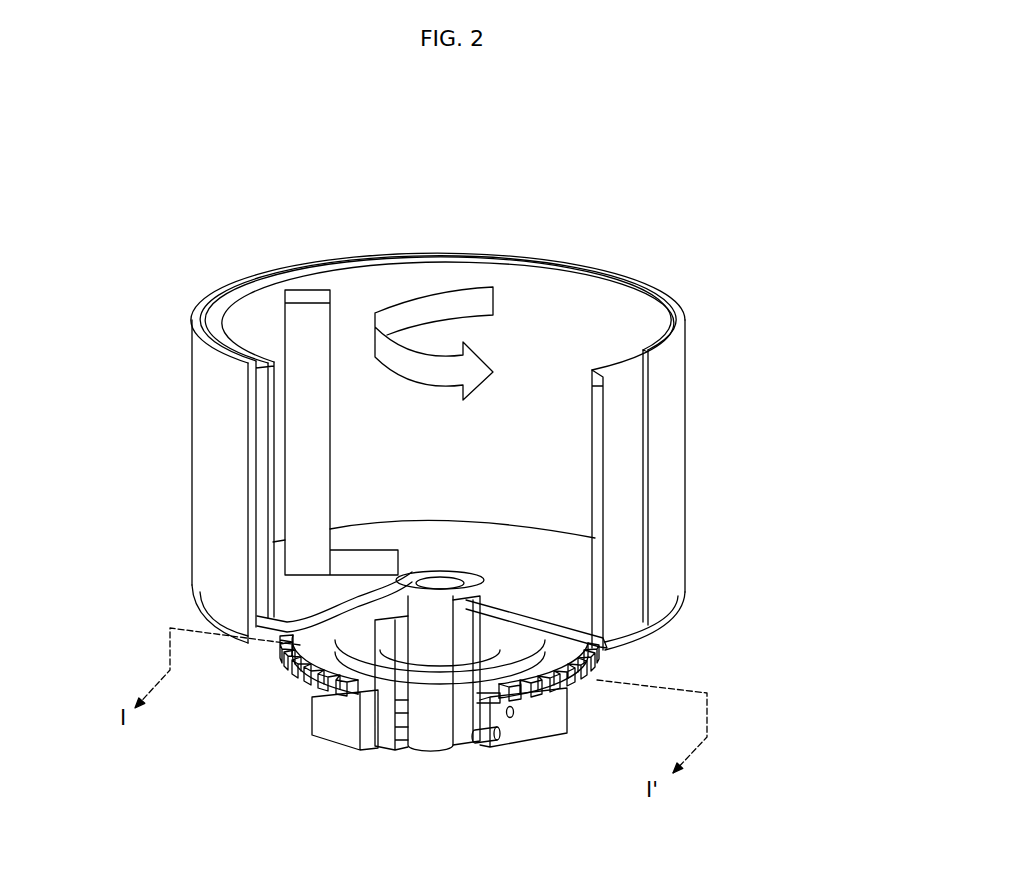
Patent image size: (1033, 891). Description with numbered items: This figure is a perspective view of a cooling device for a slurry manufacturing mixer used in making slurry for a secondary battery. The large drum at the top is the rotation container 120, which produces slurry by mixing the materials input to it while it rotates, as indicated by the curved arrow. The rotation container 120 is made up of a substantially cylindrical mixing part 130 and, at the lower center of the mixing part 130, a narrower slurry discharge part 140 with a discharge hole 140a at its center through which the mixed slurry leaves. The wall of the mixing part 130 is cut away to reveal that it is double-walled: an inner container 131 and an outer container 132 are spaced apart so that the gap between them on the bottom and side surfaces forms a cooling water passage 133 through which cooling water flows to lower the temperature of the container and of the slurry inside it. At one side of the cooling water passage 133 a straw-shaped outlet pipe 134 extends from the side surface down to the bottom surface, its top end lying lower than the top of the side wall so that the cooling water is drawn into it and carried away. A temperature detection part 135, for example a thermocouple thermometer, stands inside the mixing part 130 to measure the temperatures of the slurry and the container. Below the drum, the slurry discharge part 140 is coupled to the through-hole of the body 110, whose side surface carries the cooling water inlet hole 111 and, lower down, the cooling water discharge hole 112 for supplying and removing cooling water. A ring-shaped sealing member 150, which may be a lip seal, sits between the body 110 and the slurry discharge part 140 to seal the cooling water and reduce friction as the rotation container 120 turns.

The body 110 is at (560, 718).
The cooling water inlet hole 111 is at (513, 716).
The cooling water discharge hole 112 is at (485, 742).
The rotation container 120 is at (367, 146).
The mixing part 130 is at (570, 199).
The inner container 131 is at (585, 296).
The outer container 132 is at (657, 302).
The cooling water passage 133 is at (668, 298).
The outlet pipe 134 is at (603, 494).
The temperature detection part 135 is at (310, 318).
The slurry discharge part 140 is at (403, 630).
The discharge hole 140a is at (443, 669).
The sealing member 150 is at (477, 727).